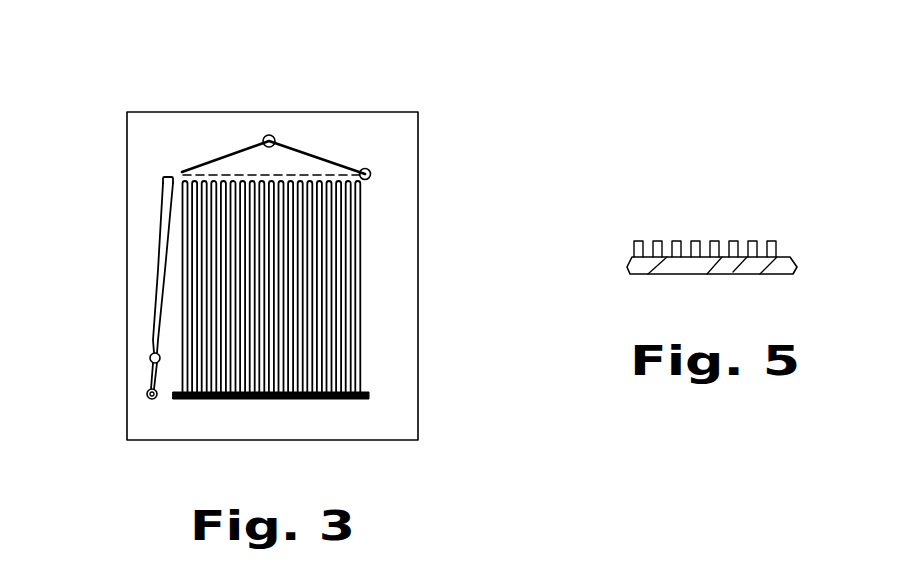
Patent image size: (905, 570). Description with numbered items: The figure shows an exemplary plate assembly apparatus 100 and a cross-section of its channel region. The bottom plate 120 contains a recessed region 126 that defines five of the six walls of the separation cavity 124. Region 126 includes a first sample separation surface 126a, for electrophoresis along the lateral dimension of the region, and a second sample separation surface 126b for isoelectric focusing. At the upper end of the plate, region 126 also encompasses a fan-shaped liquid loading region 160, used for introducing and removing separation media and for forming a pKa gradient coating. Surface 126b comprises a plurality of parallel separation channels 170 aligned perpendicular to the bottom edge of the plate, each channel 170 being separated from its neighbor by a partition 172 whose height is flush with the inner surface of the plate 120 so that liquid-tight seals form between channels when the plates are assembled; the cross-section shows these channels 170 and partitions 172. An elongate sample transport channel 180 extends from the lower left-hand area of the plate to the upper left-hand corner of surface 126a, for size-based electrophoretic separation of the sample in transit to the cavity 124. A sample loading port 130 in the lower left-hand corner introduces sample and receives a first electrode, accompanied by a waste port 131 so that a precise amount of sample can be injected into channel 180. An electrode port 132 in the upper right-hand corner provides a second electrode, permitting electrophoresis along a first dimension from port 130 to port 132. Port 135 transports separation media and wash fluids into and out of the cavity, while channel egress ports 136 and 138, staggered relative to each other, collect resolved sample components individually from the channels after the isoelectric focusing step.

In FIG. 3, the apparatus 100 is at (111, 70).
In FIG. 3, the separation cavity 124 is at (333, 277).
In FIG. 3, the recessed region 126 is at (195, 180).
In FIG. 3, the first sample separation surface 126a is at (296, 178).
In FIG. 3, the second sample separation surface 126b is at (325, 233).
In FIG. 3, the sample loading port 130 is at (152, 399).
In FIG. 3, the waste port 131 is at (150, 358).
In FIG. 3, the electrode port 132 is at (365, 168).
In FIG. 3, the port 135 is at (269, 135).
In FIG. 3, the channel egress port 136 is at (271, 433).
In FIG. 3, the channel egress port 138 is at (209, 400).
In FIG. 3, the liquid loading region 160 is at (270, 162).
In FIG. 3, the separation channels 170 is at (362, 343).
In FIG. 5, the separation channels 170 is at (738, 250).
In FIG. 5, the partition 172 is at (785, 252).
In FIG. 3, the elongate sample transport channel 180 is at (158, 250).
In FIG. 5, the bottom plate 120 is at (682, 267).